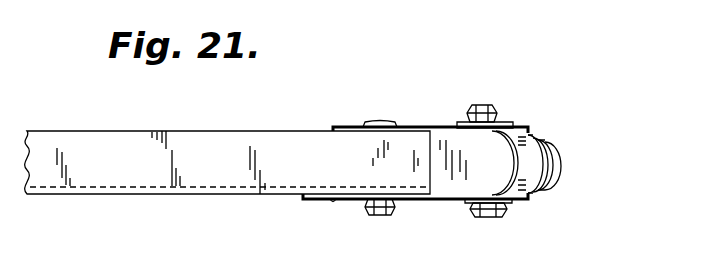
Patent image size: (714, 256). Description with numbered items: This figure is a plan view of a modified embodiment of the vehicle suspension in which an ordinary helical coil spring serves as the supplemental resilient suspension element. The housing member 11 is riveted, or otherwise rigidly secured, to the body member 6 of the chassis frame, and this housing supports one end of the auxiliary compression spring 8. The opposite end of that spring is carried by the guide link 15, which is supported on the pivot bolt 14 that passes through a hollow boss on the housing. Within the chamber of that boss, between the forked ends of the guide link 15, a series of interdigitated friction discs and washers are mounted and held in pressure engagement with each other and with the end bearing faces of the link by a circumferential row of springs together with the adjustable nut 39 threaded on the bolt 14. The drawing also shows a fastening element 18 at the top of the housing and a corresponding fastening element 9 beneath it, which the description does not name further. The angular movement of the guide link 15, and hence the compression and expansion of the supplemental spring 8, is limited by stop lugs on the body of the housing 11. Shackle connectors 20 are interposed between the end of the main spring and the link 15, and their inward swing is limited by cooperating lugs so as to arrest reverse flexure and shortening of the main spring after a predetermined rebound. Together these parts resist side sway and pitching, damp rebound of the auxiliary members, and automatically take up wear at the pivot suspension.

The body member 6 is at (74, 130).
The pivot bolt 14 is at (376, 122).
The nut 18 is at (480, 105).
The shackle connector 20 is at (508, 125).
The auxiliary compression spring 8 is at (538, 140).
The guide link 15 is at (563, 163).
The housing member 11 is at (518, 182).
The nut 9 is at (487, 217).
The adjustable nut 39 is at (380, 215).